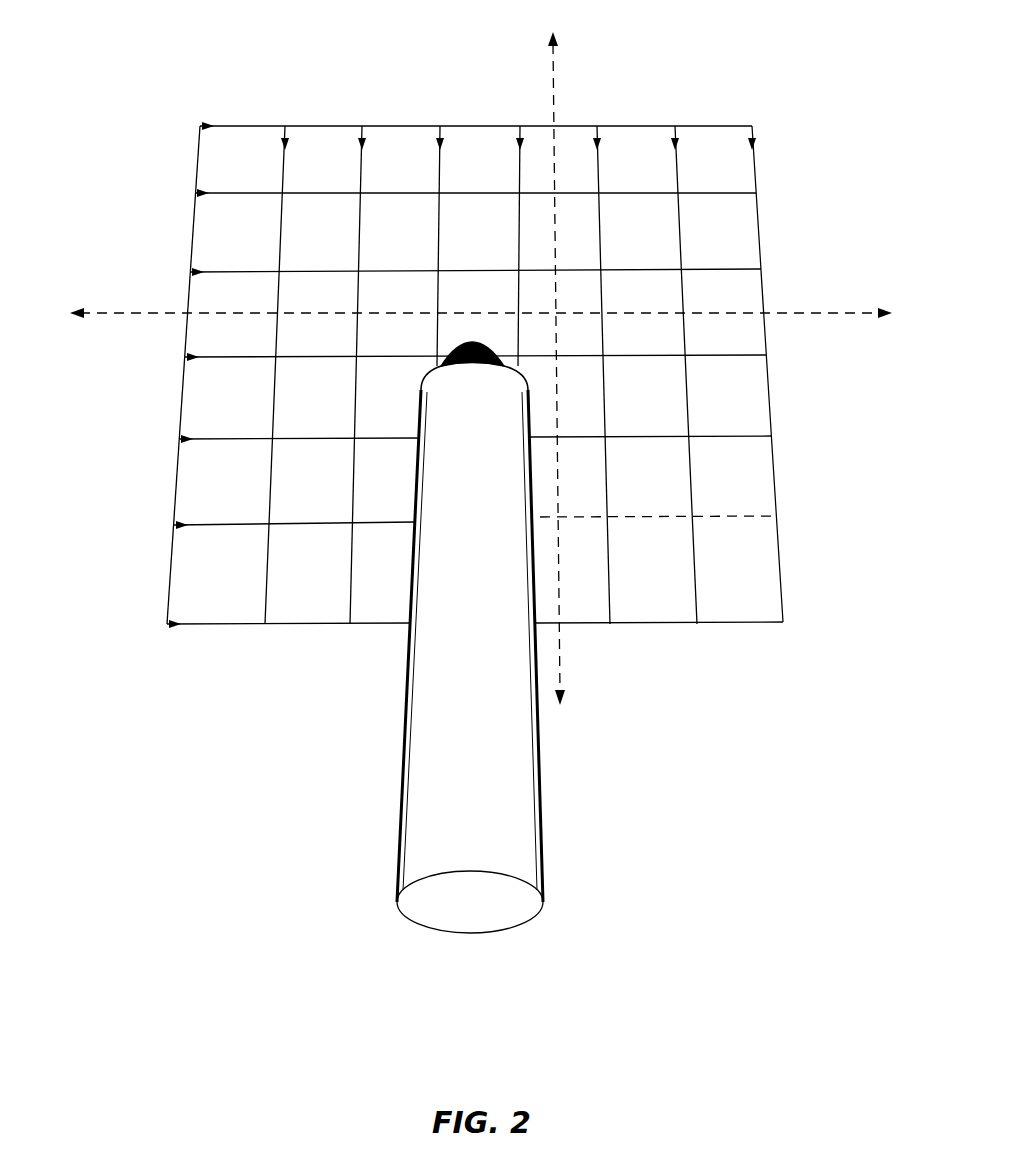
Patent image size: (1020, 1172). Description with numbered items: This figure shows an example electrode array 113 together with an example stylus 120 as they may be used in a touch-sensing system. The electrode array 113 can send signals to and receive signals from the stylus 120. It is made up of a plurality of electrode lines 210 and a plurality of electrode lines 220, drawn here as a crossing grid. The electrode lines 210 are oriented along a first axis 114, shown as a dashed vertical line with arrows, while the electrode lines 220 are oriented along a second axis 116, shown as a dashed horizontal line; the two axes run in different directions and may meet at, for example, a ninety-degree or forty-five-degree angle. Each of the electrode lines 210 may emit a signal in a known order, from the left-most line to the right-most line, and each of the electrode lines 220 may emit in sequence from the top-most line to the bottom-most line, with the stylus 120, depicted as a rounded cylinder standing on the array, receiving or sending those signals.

The electrode array 113 is at (112, 45).
The first axis 114 is at (580, 668).
The second axis 116 is at (78, 300).
The stylus 120 is at (425, 658).
The electrode lines 210 is at (284, 138).
The electrode lines 220 is at (200, 127).